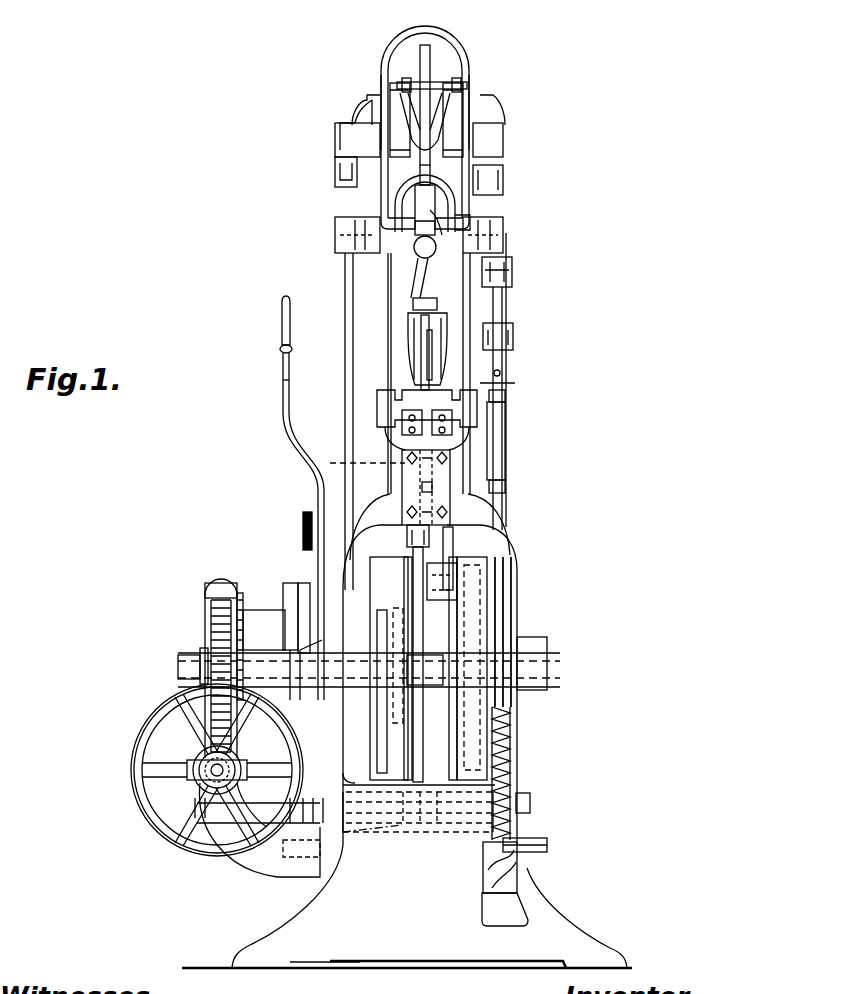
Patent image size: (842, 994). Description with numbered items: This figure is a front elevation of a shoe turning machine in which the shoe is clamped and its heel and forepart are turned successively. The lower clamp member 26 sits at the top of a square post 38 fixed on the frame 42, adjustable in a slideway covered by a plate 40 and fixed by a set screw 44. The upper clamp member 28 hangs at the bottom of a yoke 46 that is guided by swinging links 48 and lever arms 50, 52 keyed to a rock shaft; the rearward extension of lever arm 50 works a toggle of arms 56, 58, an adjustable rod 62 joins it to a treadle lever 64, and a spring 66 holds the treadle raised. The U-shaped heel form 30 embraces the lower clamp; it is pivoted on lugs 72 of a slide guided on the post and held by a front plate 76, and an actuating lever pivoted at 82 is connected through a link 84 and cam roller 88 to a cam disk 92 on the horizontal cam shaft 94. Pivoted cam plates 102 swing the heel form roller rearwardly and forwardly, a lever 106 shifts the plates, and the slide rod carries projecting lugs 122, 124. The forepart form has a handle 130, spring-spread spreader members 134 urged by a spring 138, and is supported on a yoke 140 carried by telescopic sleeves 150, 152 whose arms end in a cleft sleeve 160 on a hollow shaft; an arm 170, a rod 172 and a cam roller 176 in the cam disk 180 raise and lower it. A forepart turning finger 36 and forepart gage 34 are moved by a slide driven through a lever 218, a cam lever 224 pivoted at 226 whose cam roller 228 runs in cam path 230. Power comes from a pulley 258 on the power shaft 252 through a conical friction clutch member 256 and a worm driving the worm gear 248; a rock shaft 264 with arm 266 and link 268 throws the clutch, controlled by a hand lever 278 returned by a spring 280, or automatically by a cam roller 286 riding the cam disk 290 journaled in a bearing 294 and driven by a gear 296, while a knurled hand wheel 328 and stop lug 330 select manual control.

The lower clamp member 26 is at (413, 309).
The upper clamp member 28 is at (420, 258).
The heel form 30 is at (410, 334).
The forepart gage 34 is at (432, 183).
The forepart turning finger 36 is at (448, 214).
The square post 38 is at (330, 463).
The plate 40 is at (497, 480).
The frame 42 is at (505, 445).
The set screw 44 is at (422, 487).
The yoke 46 is at (457, 137).
The swinging links 48 is at (345, 220).
The lever arm 50 is at (483, 122).
The lever arm 52 is at (360, 110).
The toggle arm 56 is at (496, 200).
The toggle arm 58 is at (498, 315).
The adjustable rod 62 is at (499, 374).
The treadle lever 64 is at (530, 847).
The spring 66 is at (508, 745).
The lugs 72 is at (500, 387).
The front plate 76 is at (448, 422).
The pivot 82 is at (505, 402).
The link 84 is at (448, 537).
The cam roller 88 is at (465, 572).
The cam disk 92 is at (487, 615).
The cam shaft 94 is at (547, 665).
The cam plates 102 is at (430, 330).
The lever 106 is at (445, 365).
The projecting lug 122 is at (408, 455).
The projecting lug 124 is at (385, 390).
The handle 130 is at (427, 58).
The spreader members 134 is at (440, 125).
The spring 138 is at (415, 80).
The yoke 140 is at (384, 118).
The sleeves 150 is at (420, 157).
The sleeves 152 is at (375, 108).
The cleft sleeve 160 is at (466, 85).
The arm 170 is at (337, 166).
The rod 172 is at (290, 368).
The cam roller 176 is at (378, 610).
The cam disk 180 is at (393, 772).
The lever 218 is at (482, 262).
The cam lever 224 is at (425, 620).
The pivot 226 is at (530, 808).
The cam roller 228 is at (405, 685).
The cam path 230 is at (415, 735).
The worm gear 248 is at (210, 592).
The power shaft 252 is at (205, 775).
The conical friction clutch member 256 is at (150, 740).
The pulley 258 is at (170, 698).
The rock shaft 264 is at (268, 812).
The arm 266 is at (343, 825).
The link 268 is at (318, 730).
The hand lever 278 is at (285, 385).
The spring 280 is at (345, 636).
The cam roller 286 is at (310, 580).
The cam disk 290 is at (288, 600).
The bearing 294 is at (245, 640).
The gear 296 is at (238, 585).
The knurled hand wheel 328 is at (303, 515).
The stop lug 330 is at (407, 540).